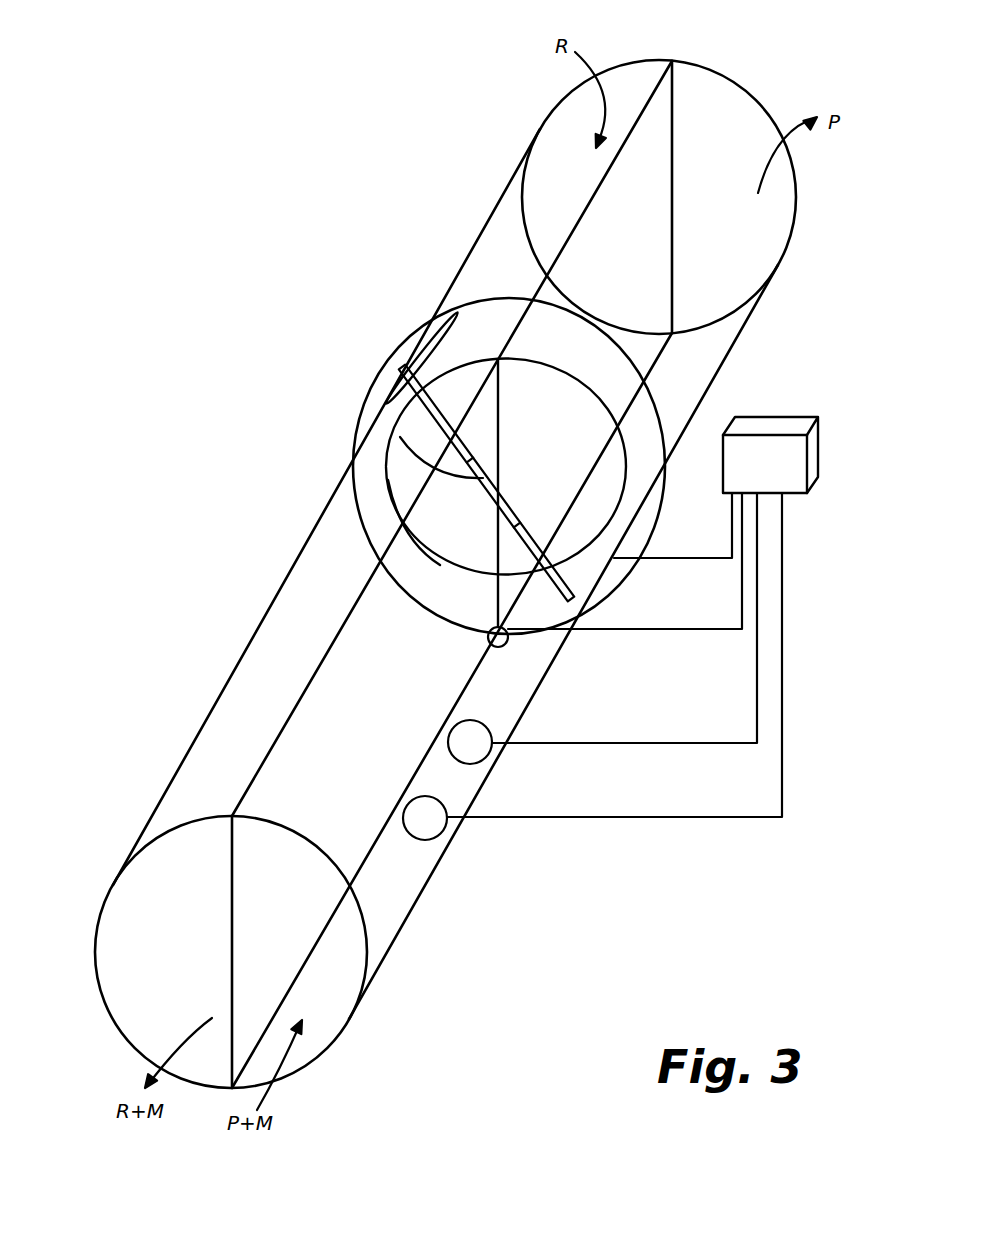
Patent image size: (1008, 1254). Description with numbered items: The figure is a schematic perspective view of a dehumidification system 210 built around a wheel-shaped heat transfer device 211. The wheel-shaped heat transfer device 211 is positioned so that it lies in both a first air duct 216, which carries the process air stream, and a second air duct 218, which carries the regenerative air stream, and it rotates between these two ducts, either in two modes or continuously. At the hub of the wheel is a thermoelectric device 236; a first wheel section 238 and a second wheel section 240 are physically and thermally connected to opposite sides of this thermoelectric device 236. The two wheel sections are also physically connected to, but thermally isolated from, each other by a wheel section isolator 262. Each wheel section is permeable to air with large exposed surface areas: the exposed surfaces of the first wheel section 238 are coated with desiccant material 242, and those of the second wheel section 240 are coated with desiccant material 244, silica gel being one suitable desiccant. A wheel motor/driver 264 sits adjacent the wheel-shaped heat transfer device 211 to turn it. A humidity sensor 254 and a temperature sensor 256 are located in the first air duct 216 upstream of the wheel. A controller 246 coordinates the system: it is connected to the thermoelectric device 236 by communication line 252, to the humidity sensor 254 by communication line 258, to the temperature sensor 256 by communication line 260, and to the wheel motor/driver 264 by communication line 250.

The dehumidification system 210 is at (778, 98).
The wheel-shaped heat transfer device 211 is at (662, 404).
The first air duct 216 is at (343, 973).
The second air duct 218 is at (152, 1000).
The thermoelectric device 236 is at (386, 497).
The first wheel section 238 is at (362, 447).
The second wheel section 240 is at (462, 393).
The desiccant material 242 is at (387, 513).
The desiccant material 244 is at (483, 367).
The controller 246 is at (820, 455).
The communication line 250 is at (637, 630).
The communication line 252 is at (660, 557).
The humidity sensor 254 is at (478, 762).
The temperature sensor 256 is at (435, 830).
The communication line 258 is at (657, 744).
The communication line 260 is at (650, 818).
The wheel section isolator 262 is at (573, 583).
The wheel motor/driver 264 is at (510, 640).